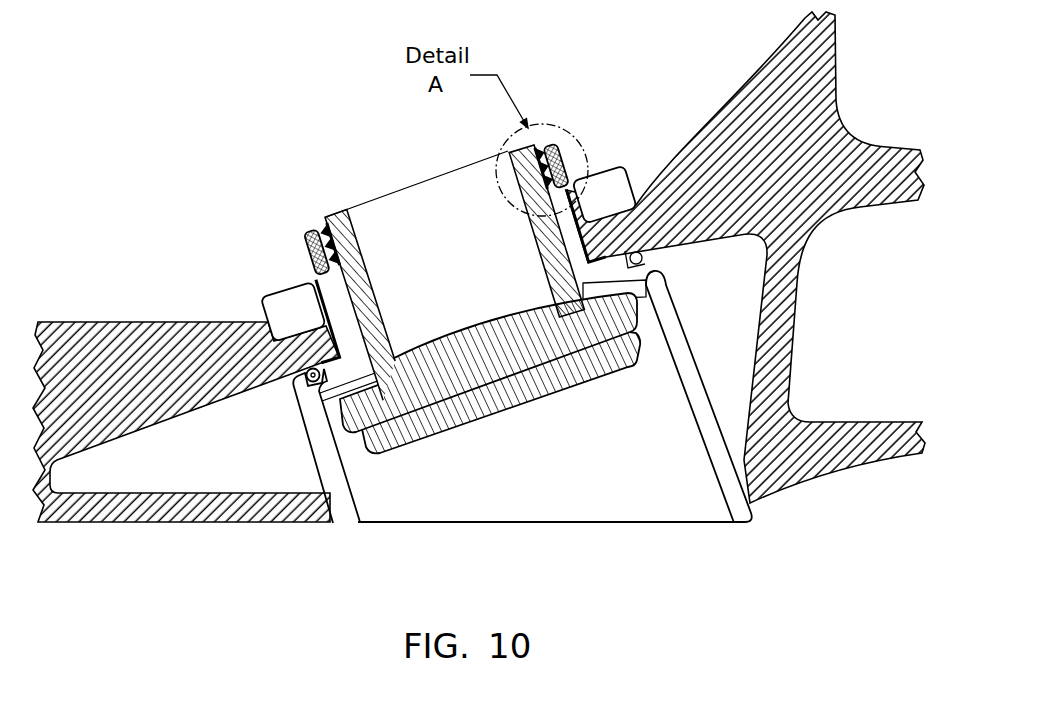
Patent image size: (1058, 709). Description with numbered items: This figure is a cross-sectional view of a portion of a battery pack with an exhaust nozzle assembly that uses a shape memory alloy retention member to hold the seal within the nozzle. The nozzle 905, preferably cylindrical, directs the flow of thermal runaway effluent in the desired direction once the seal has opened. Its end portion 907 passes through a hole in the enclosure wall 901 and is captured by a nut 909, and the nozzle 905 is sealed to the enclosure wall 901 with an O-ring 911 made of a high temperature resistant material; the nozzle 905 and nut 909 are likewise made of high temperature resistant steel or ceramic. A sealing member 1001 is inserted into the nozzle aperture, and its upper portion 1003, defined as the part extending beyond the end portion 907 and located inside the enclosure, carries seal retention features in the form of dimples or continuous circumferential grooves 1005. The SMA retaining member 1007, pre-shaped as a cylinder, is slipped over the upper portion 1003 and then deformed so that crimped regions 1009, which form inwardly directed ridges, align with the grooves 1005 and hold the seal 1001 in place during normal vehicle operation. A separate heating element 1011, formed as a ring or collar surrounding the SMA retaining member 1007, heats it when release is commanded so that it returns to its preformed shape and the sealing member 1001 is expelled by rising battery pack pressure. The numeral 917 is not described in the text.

The enclosure wall 901 is at (138, 405).
The nozzle 905 is at (692, 398).
The end portion of nozzle 907 is at (578, 248).
The nut 909 is at (612, 203).
The O-ring 911 is at (306, 370).
The bracket 917 is at (295, 377).
The sealing member 1001 is at (466, 368).
The upper portion of sealing member 1003 is at (350, 238).
The grooves 1005 is at (333, 217).
The SMA retaining member 1007 is at (553, 147).
The crimped regions 1009 is at (543, 154).
The heating element 1011 is at (308, 258).